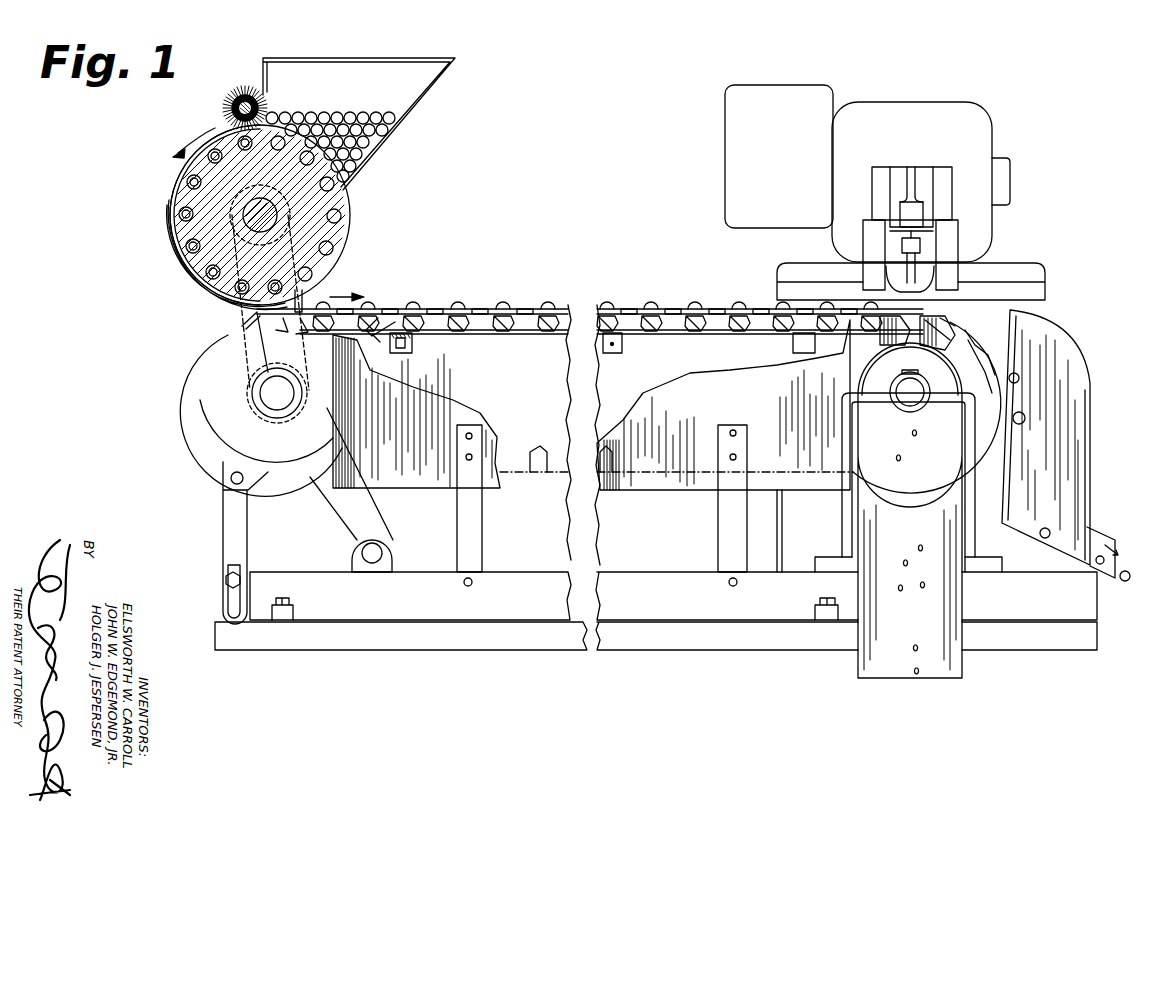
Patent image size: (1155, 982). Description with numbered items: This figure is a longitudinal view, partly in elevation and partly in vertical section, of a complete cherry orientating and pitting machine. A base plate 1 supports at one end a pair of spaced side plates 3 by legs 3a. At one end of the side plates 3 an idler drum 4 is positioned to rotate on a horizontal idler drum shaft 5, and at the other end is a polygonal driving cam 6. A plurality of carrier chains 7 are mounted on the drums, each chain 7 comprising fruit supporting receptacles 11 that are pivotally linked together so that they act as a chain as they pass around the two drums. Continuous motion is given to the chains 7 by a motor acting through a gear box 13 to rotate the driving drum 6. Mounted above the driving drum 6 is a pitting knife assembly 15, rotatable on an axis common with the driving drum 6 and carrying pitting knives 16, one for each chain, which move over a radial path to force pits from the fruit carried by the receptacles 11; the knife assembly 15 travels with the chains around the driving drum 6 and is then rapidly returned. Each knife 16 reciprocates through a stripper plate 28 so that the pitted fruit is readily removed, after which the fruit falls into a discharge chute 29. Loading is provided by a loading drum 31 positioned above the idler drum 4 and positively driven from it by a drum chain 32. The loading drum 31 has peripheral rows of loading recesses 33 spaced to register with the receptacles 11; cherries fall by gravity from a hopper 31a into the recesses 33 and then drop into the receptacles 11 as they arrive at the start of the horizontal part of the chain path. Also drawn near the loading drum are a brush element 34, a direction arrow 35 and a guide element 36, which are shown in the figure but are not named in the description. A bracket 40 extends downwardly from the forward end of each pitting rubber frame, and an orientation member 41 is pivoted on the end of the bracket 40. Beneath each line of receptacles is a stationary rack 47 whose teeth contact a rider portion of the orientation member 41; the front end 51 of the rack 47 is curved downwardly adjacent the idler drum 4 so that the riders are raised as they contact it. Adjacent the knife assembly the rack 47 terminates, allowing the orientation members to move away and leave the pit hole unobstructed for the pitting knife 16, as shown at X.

The base plate 1 is at (490, 635).
The side plates 3 is at (425, 470).
The legs 3a is at (480, 498).
The idler drum 4 is at (322, 410).
The idler drum shaft 5 is at (275, 393).
The polygonal driving cam 6 is at (955, 325).
The carrier chains 7 is at (508, 312).
The fruit supporting receptacles 11 is at (665, 286).
The gear box 13 is at (790, 160).
The pitting knife assembly 15 is at (912, 213).
The pitting knives 16 is at (916, 266).
The stripper plate 28 is at (865, 295).
The discharge chute 29 is at (1065, 405).
The loading drum 31 is at (333, 219).
The hopper 31a is at (405, 112).
The drum chain 32 is at (305, 297).
The loading recesses 33 is at (190, 248).
The brush 34 is at (228, 108).
The direction arrow 35 is at (178, 160).
The disk guide shroud 36 is at (225, 293).
The bracket 40 is at (610, 318).
The orientation member 41 is at (693, 322).
The stationary rack 47 is at (418, 336).
The front end of rack 51 is at (392, 333).
The location where rack terminates X is at (935, 310).